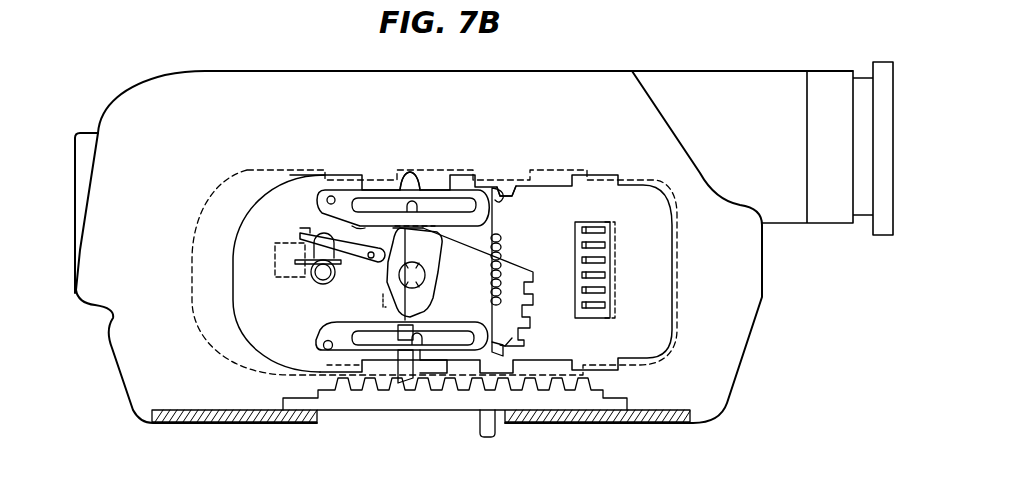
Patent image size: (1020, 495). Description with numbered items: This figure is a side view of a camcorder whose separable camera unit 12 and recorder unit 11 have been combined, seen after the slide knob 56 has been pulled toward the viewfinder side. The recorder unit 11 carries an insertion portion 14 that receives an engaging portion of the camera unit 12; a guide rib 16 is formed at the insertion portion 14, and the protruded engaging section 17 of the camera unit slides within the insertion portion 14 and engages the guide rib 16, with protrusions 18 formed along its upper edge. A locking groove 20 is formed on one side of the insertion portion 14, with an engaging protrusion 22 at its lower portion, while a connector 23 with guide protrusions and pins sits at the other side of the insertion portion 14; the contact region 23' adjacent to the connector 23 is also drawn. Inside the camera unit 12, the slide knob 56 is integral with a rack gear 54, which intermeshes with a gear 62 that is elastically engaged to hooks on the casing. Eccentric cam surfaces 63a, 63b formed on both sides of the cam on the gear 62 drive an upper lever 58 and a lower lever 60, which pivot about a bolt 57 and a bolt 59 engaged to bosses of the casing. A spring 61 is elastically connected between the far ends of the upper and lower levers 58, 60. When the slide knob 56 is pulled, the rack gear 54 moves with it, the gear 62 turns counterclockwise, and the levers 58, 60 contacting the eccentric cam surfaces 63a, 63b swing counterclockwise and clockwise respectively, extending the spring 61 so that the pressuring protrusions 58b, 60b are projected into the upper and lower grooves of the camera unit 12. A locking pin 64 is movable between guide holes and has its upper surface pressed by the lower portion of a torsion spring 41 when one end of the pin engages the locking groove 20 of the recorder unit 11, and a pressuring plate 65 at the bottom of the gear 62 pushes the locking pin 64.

The recorder unit 11 is at (90, 131).
The camera unit 12 is at (762, 302).
The insertion portion 14 is at (218, 199).
The guide rib 16 is at (520, 185).
The protruded engaging section 17 is at (233, 256).
The protrusions 18 is at (603, 175).
The locking groove 20 is at (285, 278).
The engaging protrusion 22 is at (297, 233).
The connector 23 is at (641, 260).
The battery contact 23' is at (662, 270).
The torsion spring 41 is at (299, 230).
The rack gear 54 is at (460, 412).
The slide knob 56 is at (495, 418).
The bolt 57 is at (333, 196).
The upper lever 58 is at (492, 190).
The pressuring protrusion 58b is at (404, 173).
The bolt 59 is at (326, 349).
The lower lever 60 is at (327, 330).
The pressuring protrusion 60b is at (398, 385).
The spring 61 is at (494, 248).
The gear 62 is at (503, 295).
The eccentric cam surface 63a is at (425, 230).
The eccentric cam surface 63b is at (407, 365).
The locking pin 64 is at (358, 228).
The pressuring plate 65 is at (383, 298).